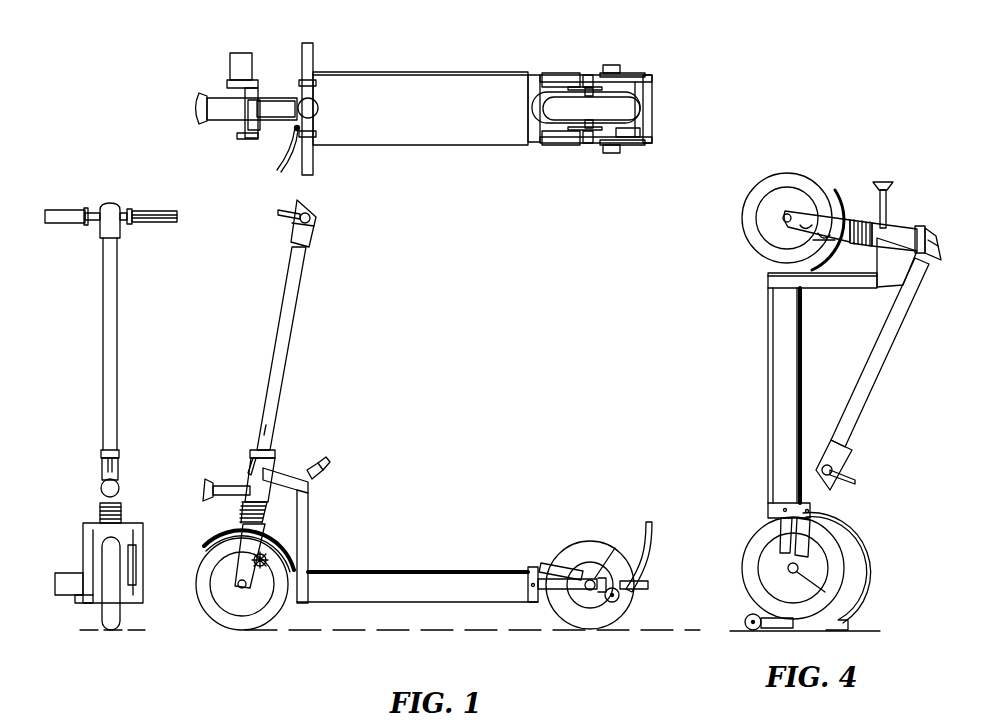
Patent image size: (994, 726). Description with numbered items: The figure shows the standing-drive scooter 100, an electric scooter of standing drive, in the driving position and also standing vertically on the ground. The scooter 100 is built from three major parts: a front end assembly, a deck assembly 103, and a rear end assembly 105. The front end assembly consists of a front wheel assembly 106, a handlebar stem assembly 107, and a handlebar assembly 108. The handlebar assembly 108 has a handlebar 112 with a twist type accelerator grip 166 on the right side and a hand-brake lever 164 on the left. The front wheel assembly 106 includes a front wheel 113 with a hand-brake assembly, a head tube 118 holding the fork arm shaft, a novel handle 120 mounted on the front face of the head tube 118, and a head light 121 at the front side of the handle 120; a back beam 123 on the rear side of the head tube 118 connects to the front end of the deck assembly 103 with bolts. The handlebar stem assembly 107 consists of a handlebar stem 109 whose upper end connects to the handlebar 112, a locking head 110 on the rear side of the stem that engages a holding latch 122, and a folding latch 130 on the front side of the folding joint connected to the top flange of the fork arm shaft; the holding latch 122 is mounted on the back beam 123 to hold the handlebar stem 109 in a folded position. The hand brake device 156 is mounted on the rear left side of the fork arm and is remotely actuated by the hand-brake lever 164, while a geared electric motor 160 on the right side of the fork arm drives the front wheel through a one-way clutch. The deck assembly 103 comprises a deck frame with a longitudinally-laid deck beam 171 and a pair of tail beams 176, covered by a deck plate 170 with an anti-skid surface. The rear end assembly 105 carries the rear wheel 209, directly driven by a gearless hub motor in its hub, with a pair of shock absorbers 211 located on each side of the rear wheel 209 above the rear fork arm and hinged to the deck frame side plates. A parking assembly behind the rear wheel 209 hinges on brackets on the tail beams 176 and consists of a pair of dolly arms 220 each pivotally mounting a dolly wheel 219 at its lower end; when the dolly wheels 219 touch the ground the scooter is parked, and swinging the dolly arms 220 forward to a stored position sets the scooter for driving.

In FIG. 1, the standing-drive scooter 100 is at (484, 382).
In FIG. 1, the deck assembly 103 is at (481, 166).
In FIG. 1, the rear end assembly 105 is at (612, 52).
In FIG. 1, the front wheel assembly 106 is at (260, 549).
In FIG. 1, the handlebar stem assembly 107 is at (325, 374).
In FIG. 1, the handlebar assembly 108 is at (328, 164).
In FIG. 1, the handlebar stem 109 is at (298, 312).
In FIG. 4, the handlebar stem 109 is at (893, 355).
In FIG. 1, the locking head 110 is at (280, 418).
In FIG. 1, the handlebar 112 is at (314, 94).
In FIG. 1, the front wheel 113 is at (270, 600).
In FIG. 1, the head tube 118 is at (298, 450).
In FIG. 1, the handle 120 is at (232, 118).
In FIG. 1, the head light 121 is at (198, 112).
In FIG. 1, the holding latch 122 is at (324, 467).
In FIG. 1, the back beam 123 is at (310, 540).
In FIG. 1, the folding latch 130 is at (254, 455).
In FIG. 1, the hand brake device 156 is at (266, 564).
In FIG. 1, the geared electric motor 160 is at (229, 70).
In FIG. 1, the hand-brake lever 164 is at (292, 140).
In FIG. 1, the twist type accelerator grip 166 is at (302, 52).
In FIG. 1, the deck plate 170 is at (428, 146).
In FIG. 1, the deck beam 171 is at (426, 604).
In FIG. 1, the tail beams 176 is at (650, 561).
In FIG. 1, the rear wheel 209 is at (645, 108).
In FIG. 1, the shock absorbers 211 is at (566, 146).
In FIG. 1, the dolly wheels 219 is at (616, 153).
In FIG. 1, the dolly arms 220 is at (634, 145).